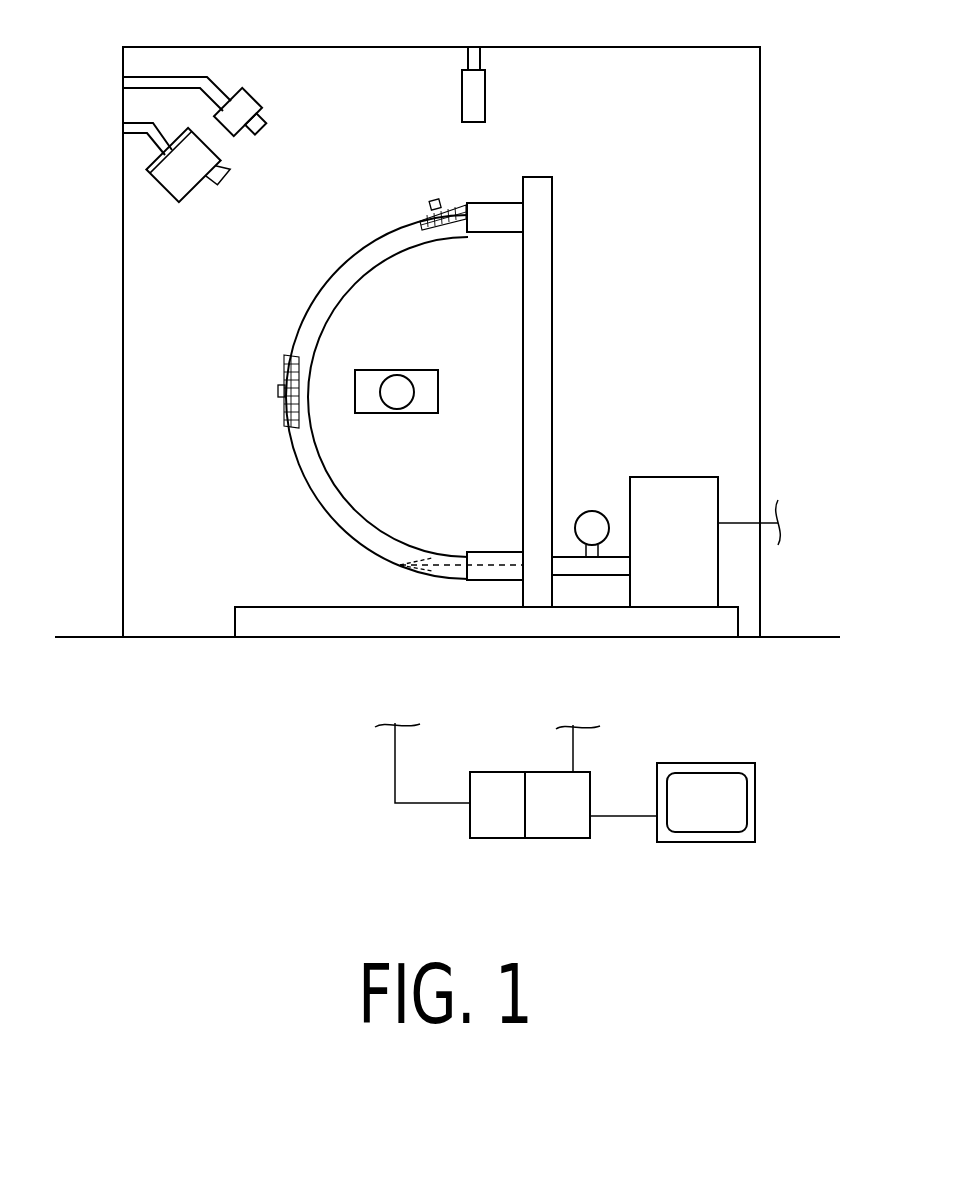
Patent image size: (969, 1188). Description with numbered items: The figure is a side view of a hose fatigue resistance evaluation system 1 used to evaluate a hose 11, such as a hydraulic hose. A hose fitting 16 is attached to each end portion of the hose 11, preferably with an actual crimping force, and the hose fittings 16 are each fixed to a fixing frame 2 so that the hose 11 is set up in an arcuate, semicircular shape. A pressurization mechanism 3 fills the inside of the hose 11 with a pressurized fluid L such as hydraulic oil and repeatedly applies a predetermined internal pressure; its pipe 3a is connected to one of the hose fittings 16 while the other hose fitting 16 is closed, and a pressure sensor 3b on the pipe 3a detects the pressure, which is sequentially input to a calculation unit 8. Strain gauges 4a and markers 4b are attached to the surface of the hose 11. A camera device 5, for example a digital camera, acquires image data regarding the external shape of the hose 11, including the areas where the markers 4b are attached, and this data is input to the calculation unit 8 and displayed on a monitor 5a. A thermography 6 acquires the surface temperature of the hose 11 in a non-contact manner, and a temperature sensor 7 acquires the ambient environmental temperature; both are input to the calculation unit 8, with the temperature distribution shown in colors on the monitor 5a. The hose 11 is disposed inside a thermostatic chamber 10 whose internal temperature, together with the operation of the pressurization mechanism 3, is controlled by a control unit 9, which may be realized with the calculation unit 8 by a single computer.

The hose fatigue resistance evaluation system 1 is at (770, 170).
The fixing frame 2 is at (543, 283).
The pressurization mechanism 3 is at (680, 478).
The pipe 3a is at (609, 566).
The pressure sensor 3b is at (592, 520).
The strain gauge 4a is at (436, 203).
The marker 4b is at (420, 211).
The camera device 5 is at (175, 190).
The monitor 5a is at (712, 785).
The thermography 6 is at (258, 112).
The temperature sensor 7 is at (483, 100).
The calculation unit 8 is at (497, 833).
The control unit 9 is at (568, 833).
The thermostatic chamber 10 is at (760, 372).
The hose 11 is at (300, 302).
The hose fitting 16 is at (496, 228).
The pressurized fluid L is at (440, 555).